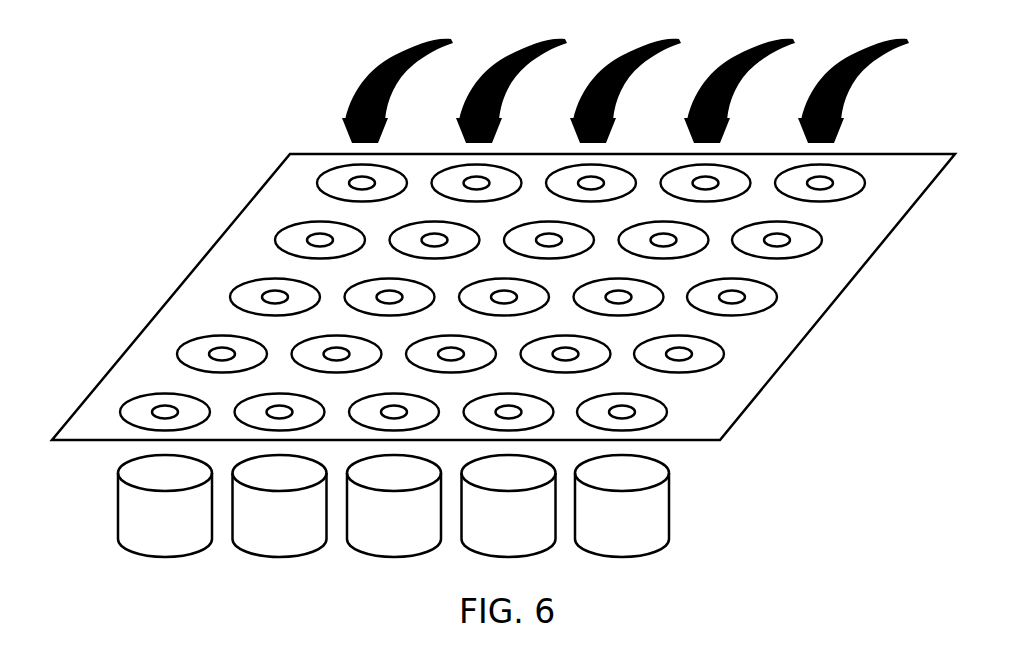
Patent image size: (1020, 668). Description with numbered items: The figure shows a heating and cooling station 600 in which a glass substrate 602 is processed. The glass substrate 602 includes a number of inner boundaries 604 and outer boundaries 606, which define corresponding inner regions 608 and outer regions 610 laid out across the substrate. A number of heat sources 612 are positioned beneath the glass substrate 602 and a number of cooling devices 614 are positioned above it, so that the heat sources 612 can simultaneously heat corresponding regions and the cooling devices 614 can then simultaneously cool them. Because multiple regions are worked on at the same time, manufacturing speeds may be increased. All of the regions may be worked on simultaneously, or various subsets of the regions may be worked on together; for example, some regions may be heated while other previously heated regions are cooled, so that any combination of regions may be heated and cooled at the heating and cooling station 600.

The heating and cooling station 600 is at (143, 93).
The glass substrate 602 is at (803, 340).
The inner boundaries 604 is at (632, 411).
The outer boundaries 606 is at (273, 240).
The inner regions 608 is at (820, 185).
The outer regions 610 is at (193, 357).
The heat sources 612 is at (118, 492).
The cooling devices 614 is at (343, 118).